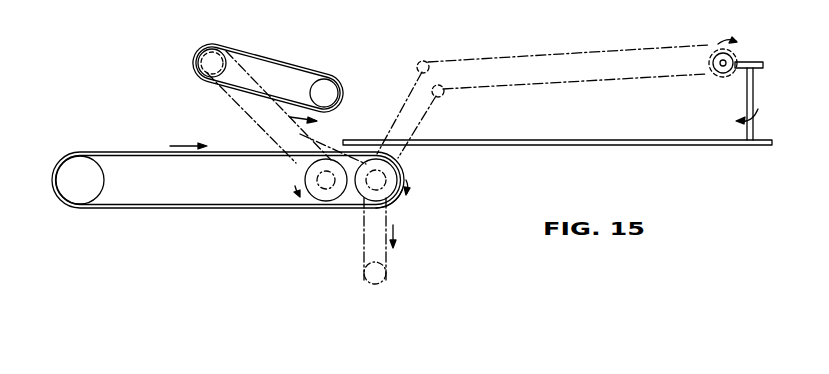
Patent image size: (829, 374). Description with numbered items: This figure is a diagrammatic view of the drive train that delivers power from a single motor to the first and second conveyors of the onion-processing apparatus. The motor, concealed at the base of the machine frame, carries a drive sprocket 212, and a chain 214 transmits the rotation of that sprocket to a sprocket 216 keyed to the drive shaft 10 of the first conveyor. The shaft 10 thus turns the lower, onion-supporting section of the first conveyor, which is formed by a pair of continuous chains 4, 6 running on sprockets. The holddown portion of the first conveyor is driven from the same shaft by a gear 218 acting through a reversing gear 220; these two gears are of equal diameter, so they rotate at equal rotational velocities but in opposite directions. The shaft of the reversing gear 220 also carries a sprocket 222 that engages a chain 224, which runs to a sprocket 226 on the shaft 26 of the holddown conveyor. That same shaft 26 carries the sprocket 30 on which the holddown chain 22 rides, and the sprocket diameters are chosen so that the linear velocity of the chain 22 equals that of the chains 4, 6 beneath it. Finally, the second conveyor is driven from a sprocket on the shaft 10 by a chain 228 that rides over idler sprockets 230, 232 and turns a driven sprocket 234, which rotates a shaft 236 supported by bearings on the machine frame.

The continuous chain 4 is at (176, 206).
The continuous chain 6 is at (228, 180).
The drive shaft 10 is at (388, 200).
The chain 22 is at (280, 63).
The shaft 26 is at (213, 65).
The sprocket 30 is at (213, 48).
The drive sprocket 212 is at (387, 270).
The chain 214 is at (363, 242).
The sprocket 216 is at (386, 180).
The gear 218 is at (364, 204).
The reversing gear 220 is at (328, 203).
The sprocket 222 is at (316, 184).
The chain 224 is at (317, 136).
The sprocket 226 is at (229, 47).
The chain 228 is at (421, 113).
The idler sprocket 230 is at (421, 60).
The idler sprocket 232 is at (444, 93).
The driven sprocket 234 is at (712, 66).
The shaft 236 is at (727, 60).